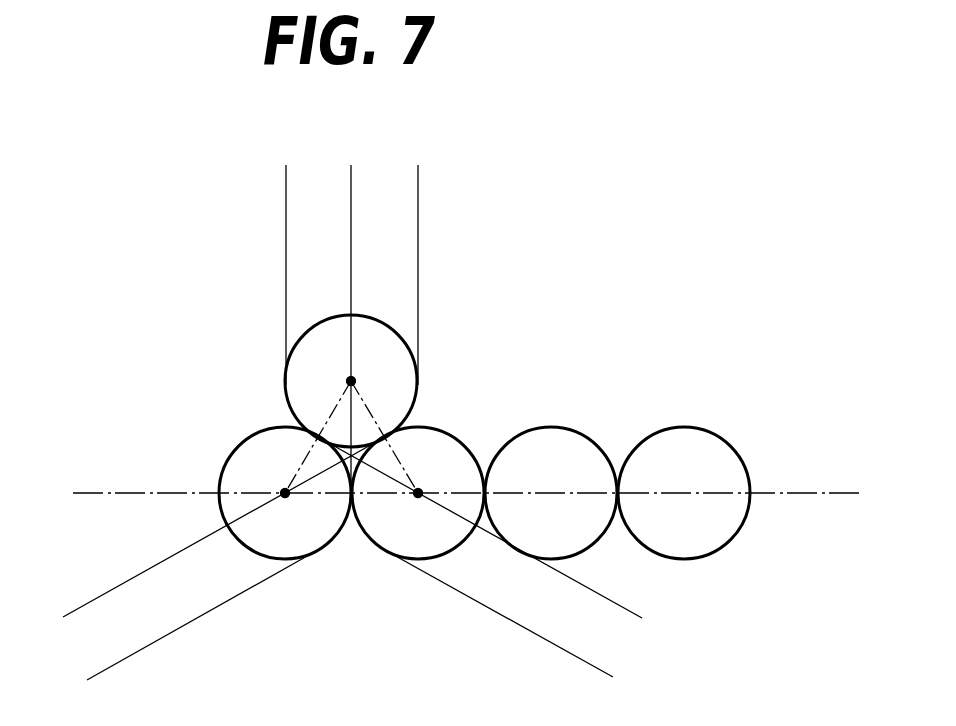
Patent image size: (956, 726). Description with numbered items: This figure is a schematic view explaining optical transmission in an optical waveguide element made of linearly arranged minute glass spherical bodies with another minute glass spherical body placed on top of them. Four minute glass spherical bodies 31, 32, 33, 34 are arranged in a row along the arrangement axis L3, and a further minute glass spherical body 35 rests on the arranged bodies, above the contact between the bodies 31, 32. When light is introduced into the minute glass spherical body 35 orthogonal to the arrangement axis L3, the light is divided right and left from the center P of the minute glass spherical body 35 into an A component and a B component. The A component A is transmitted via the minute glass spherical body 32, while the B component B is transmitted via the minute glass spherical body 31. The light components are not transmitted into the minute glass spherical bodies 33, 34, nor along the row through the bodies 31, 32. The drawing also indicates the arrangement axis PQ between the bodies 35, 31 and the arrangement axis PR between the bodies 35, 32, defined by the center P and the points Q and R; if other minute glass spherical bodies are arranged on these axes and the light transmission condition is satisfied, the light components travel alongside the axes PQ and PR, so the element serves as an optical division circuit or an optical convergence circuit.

The minute glass spherical body 31 is at (264, 447).
The minute glass spherical body 32 is at (418, 440).
The minute glass spherical body 33 is at (547, 445).
The minute glass spherical body 34 is at (680, 445).
The minute glass spherical body 35 is at (296, 393).
The arrangement axis L3 is at (800, 493).
The center of the minute glass spherical body 35 P is at (348, 378).
The center of the minute glass spherical body 31 Q is at (284, 492).
The center of the minute glass spherical body 32 R is at (425, 487).
The A component of the light A is at (320, 214).
The B component of the light B is at (386, 214).